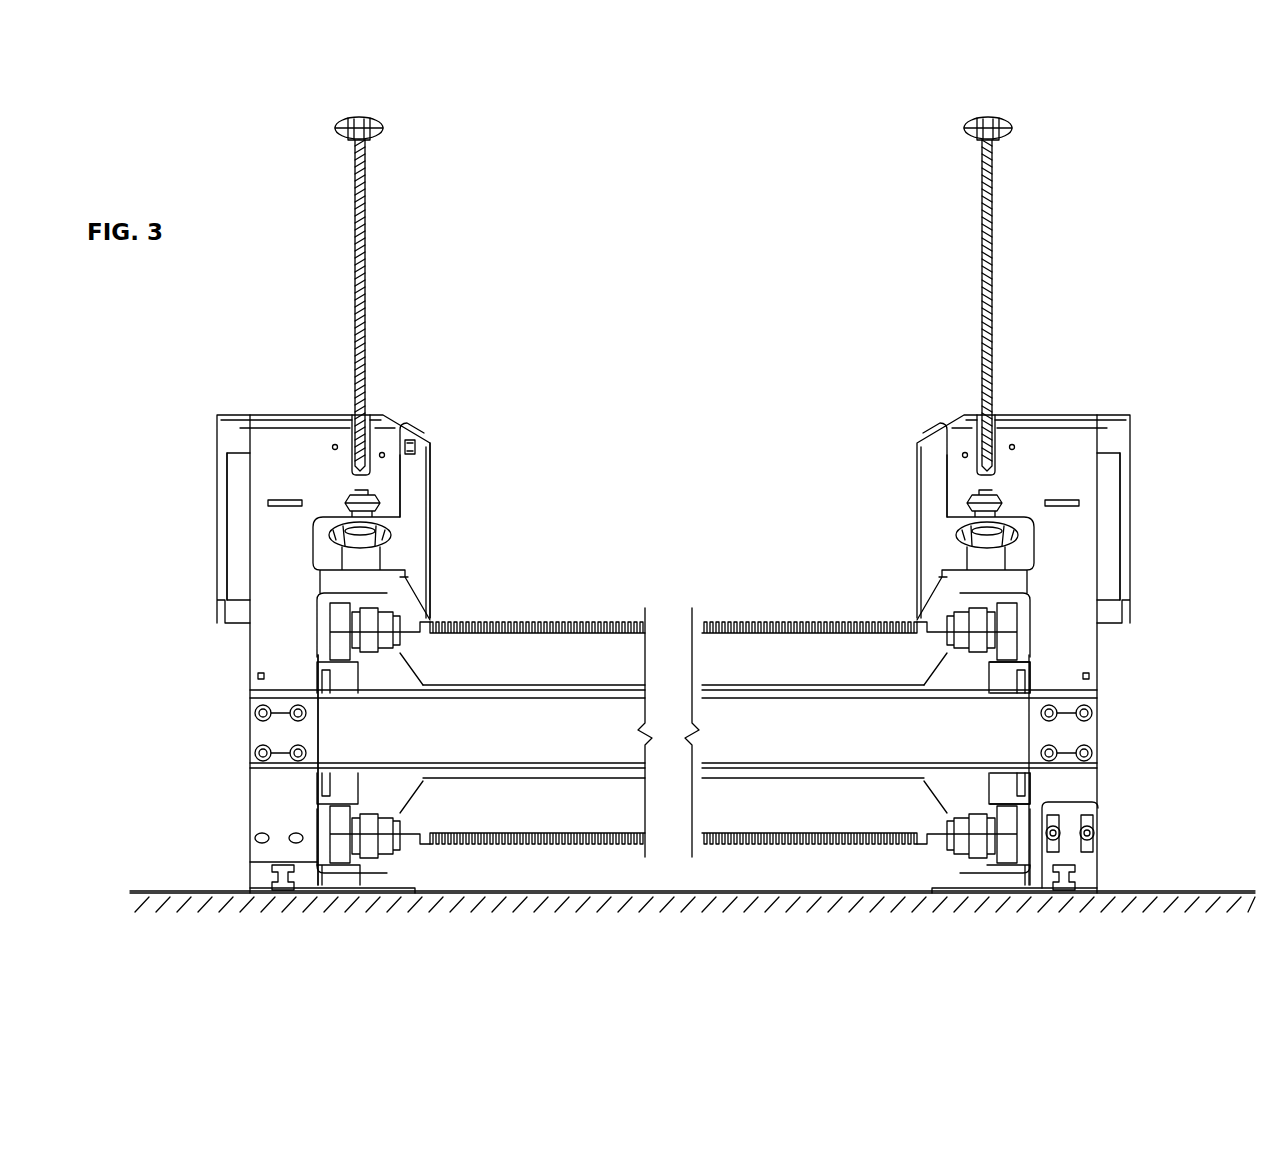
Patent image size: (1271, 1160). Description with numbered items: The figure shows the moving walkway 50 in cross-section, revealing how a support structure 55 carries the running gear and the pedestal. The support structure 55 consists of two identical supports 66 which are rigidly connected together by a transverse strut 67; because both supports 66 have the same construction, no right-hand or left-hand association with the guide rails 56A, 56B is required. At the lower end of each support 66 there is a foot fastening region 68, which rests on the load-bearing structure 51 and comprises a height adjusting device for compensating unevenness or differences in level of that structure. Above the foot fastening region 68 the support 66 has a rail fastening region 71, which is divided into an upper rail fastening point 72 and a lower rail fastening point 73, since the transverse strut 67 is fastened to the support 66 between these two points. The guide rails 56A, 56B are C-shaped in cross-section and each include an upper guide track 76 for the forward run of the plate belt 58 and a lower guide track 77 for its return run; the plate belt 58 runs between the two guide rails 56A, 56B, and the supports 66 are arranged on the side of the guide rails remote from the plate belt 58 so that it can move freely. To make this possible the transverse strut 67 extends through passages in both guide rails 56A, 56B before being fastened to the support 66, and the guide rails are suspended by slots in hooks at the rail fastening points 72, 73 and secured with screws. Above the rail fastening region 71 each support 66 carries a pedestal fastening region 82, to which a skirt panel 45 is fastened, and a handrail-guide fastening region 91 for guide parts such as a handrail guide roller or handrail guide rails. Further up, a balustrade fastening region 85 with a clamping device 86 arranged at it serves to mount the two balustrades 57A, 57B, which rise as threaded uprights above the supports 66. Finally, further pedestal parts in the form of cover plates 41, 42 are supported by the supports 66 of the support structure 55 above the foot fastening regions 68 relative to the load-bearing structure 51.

The moving walkway 50 is at (675, 248).
The balustrade 57A is at (352, 222).
The balustrade 57B is at (995, 205).
The balustrade fastening region 85 is at (348, 406).
The cover plate 41 is at (300, 415).
The cover plate 42 is at (217, 485).
The clamping device 86 is at (416, 447).
The skirt panel 45 is at (431, 490).
The support 66 is at (270, 565).
The pedestal fastening region 82 is at (412, 578).
The handrail-guide fastening region 91 is at (1020, 540).
The upper guide track 76 is at (338, 654).
The plate belt 58 is at (602, 640).
The support structure 55 is at (740, 681).
The transverse strut 67 is at (545, 735).
The guide rail 56A is at (316, 735).
The guide rail 56B is at (1030, 738).
The rail fastening region 71 is at (327, 735).
The upper rail fastening point 72 is at (1006, 675).
The lower rail fastening point 73 is at (1008, 791).
The foot fastening region 68 is at (246, 872).
The lower guide track 77 is at (338, 880).
The load-bearing structure 51 is at (400, 905).